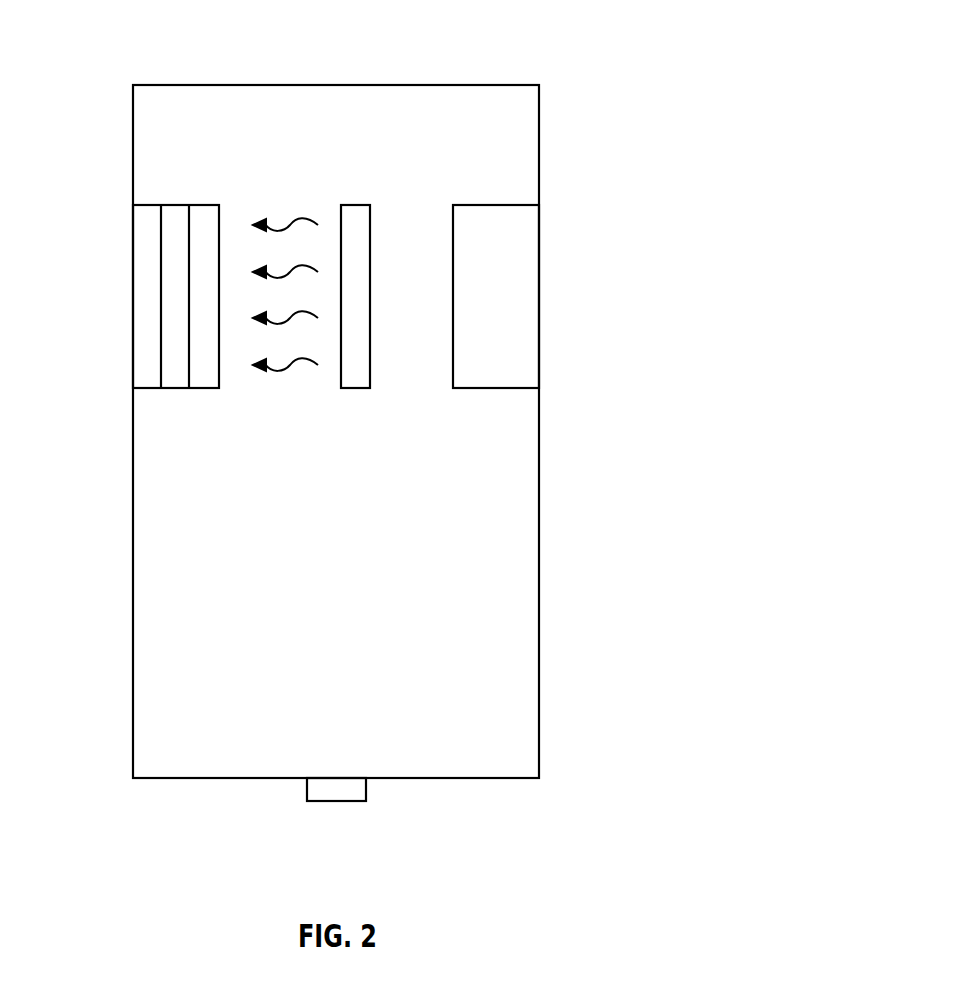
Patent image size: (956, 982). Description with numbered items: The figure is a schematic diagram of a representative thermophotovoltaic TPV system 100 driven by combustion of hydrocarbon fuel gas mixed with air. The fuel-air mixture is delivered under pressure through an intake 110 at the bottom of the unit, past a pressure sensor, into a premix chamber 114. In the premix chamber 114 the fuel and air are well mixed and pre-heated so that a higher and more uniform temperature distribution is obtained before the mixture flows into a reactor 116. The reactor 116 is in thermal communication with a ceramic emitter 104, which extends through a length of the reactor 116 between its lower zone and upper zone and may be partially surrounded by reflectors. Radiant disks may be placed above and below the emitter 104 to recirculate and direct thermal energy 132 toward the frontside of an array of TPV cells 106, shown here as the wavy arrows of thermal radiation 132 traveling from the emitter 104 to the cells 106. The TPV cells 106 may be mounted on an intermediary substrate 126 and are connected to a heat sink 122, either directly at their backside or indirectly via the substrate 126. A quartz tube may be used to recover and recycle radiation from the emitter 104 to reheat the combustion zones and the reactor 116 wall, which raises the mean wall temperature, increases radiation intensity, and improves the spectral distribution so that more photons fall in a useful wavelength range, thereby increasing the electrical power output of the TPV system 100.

The TPV system 100 is at (534, 32).
The ceramic emitter 104 is at (359, 204).
The array of TPV cells 106 is at (203, 212).
The intake 110 is at (350, 801).
The premix chamber 114 is at (492, 682).
The reactor 116 is at (373, 561).
The heat sink 122 is at (149, 378).
The intermediary substrate 126 is at (181, 370).
The thermal radiation 132 is at (273, 228).